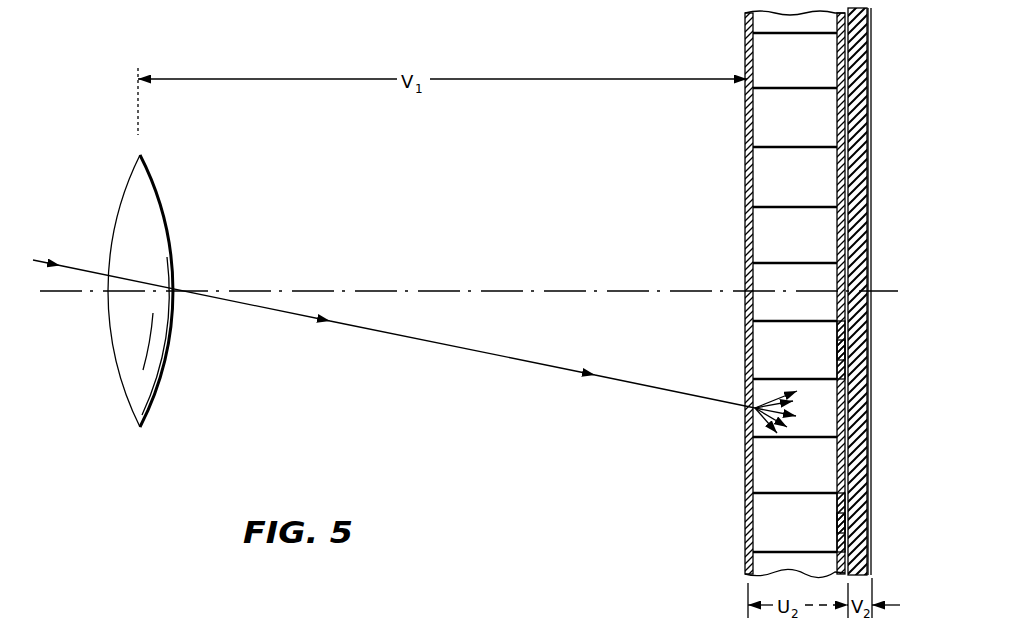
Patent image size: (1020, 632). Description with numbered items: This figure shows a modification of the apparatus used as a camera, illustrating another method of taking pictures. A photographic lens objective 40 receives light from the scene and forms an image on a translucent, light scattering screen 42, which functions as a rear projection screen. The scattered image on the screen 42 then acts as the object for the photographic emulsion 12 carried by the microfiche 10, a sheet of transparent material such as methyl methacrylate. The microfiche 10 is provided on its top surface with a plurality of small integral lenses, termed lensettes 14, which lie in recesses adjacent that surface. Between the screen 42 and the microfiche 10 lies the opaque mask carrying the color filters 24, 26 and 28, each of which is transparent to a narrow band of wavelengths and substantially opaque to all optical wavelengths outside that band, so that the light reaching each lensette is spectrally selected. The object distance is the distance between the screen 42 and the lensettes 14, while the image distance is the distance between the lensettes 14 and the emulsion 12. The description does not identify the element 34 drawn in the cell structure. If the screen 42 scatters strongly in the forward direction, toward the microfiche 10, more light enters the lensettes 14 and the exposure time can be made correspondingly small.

The microfiche 10 is at (857, 104).
The photographic emulsion 12 is at (873, 193).
The lensettes 14 is at (848, 258).
The color filter 24 is at (739, 431).
The color filter 26 is at (753, 441).
The color filter 28 is at (838, 351).
The cell partition wall 34 is at (812, 88).
The photographic lens objective 40 is at (153, 234).
The translucent light scattering screen 42 is at (745, 52).